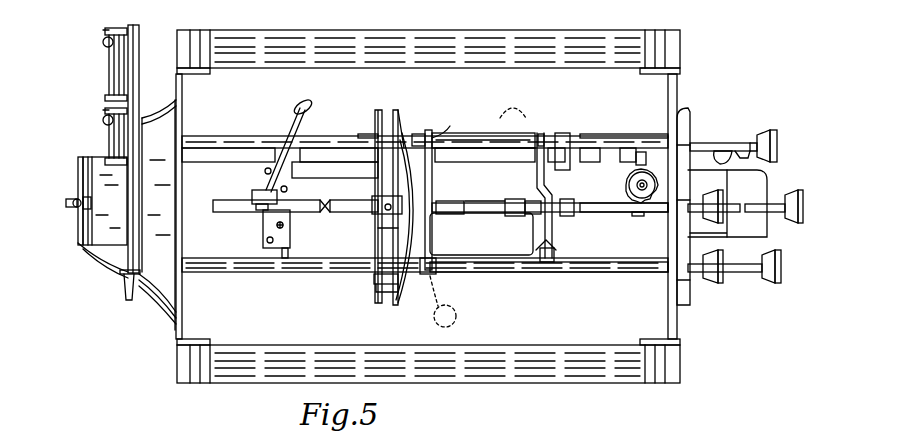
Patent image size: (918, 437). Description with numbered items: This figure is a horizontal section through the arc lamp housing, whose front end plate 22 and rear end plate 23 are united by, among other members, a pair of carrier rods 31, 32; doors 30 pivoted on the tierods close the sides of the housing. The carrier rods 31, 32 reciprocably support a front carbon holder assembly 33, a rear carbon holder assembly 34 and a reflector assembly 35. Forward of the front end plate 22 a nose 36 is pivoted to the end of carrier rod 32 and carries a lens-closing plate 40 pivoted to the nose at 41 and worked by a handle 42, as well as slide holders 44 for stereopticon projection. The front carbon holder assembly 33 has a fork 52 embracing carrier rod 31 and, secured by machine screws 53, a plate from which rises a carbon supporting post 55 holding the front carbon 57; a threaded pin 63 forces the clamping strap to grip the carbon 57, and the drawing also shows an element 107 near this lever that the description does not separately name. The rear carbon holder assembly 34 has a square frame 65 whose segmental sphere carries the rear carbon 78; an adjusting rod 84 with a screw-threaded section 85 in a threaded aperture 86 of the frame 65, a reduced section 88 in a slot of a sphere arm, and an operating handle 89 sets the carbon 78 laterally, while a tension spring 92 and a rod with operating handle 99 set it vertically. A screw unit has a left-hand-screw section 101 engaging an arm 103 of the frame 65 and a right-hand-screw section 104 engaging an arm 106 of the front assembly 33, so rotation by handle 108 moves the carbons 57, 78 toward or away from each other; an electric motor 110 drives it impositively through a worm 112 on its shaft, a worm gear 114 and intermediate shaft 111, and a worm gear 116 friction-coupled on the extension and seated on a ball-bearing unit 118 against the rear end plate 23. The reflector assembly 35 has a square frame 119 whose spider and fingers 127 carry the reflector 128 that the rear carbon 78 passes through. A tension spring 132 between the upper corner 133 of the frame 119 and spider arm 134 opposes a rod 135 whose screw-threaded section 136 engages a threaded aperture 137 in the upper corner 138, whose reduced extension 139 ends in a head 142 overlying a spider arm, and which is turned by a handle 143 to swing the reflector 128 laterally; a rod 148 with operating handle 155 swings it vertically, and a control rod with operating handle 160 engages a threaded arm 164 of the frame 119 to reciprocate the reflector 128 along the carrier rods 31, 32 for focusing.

The front end plate 22 is at (180, 327).
The rear end plate 23 is at (666, 326).
The doors 30 is at (560, 44).
The carrier rod 31 is at (228, 272).
The carrier rod 32 is at (236, 136).
The front carbon holder assembly 33 is at (300, 239).
The rear carbon holder assembly 34 is at (552, 184).
The reflector assembly 35 is at (370, 245).
The nose 36 is at (100, 256).
The plate 40 is at (82, 240).
The pivot 41 is at (70, 198).
The handle 42 is at (74, 207).
The slide holder 44 is at (133, 26).
The fork 52 is at (285, 272).
The machine screws 53 is at (267, 239).
The carbon supporting post 55 is at (262, 194).
The front carbon 57 is at (304, 200).
The pin 63 is at (292, 128).
The frame 65 is at (522, 187).
The rear carbon 78 is at (340, 201).
The adjusting rod 84 is at (600, 135).
The screw-threaded section 85 is at (542, 133).
The screw-threaded aperture 86 is at (513, 109).
The reduced section 88 is at (566, 133).
The operating handle 89 is at (770, 131).
The tension spring 92 is at (546, 264).
The operating handle 99 is at (794, 191).
The left-hand-screw section 101 is at (218, 160).
The arm 103 is at (364, 134).
The right-hand-screw section 104 is at (482, 144).
The arm 106 is at (322, 160).
The lever knob 107 is at (306, 108).
The handle 108 is at (736, 143).
The electric motor 110 is at (727, 203).
The intermediate shaft 111 is at (638, 184).
The worm 112 is at (636, 212).
The worm gear 114 is at (606, 186).
The worm gear 116 is at (641, 151).
The ball-bearing unit 118 is at (688, 112).
The frame 119 is at (450, 186).
The fingers 127 is at (384, 208).
The reflector 128 is at (376, 186).
The tension spring 132 is at (420, 134).
The upper corner 133 is at (448, 134).
The arm 134 is at (402, 135).
The rod 135 is at (508, 273).
The screw-threaded section 136 is at (438, 270).
The screw-threaded aperture 137 is at (445, 301).
The upper corner 138 is at (398, 280).
The reduced extension 139 is at (382, 305).
The head 142 is at (404, 231).
The handle 143 is at (716, 284).
The rod 148 is at (472, 212).
The operating handle 155 is at (708, 196).
The operating handle 160 is at (776, 284).
The arm 164 is at (484, 255).